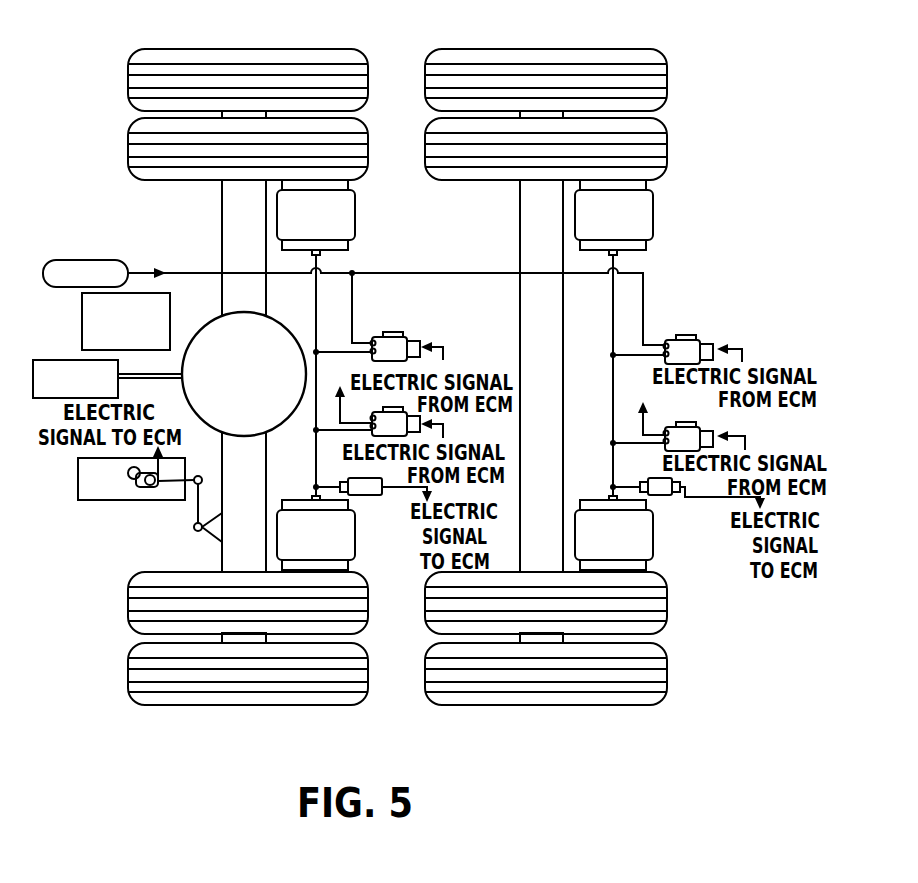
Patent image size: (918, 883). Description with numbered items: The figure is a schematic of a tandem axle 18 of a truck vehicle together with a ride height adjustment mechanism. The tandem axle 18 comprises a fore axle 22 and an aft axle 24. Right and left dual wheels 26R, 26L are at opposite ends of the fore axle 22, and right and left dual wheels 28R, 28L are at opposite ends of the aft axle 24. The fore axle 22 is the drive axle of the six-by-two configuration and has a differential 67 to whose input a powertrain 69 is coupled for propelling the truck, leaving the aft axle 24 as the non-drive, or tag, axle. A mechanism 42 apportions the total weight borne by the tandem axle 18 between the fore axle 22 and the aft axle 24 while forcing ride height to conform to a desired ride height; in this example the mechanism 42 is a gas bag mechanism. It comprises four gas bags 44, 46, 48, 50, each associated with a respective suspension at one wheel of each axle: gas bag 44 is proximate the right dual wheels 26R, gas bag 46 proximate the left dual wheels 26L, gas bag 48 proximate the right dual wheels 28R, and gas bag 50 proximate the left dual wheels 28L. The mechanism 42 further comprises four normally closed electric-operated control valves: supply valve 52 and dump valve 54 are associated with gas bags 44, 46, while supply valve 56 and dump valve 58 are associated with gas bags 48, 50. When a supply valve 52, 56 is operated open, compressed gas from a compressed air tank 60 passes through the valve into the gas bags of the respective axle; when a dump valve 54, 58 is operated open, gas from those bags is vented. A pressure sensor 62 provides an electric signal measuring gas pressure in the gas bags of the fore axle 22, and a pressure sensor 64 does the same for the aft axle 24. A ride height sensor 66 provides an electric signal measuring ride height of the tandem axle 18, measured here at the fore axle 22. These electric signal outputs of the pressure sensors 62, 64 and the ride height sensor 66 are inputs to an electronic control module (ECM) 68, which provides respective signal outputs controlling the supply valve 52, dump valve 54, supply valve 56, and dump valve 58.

The tandem axle 18 is at (194, 191).
The fore axle 22 is at (216, 222).
The aft axle 24 is at (510, 318).
The right dual wheels 26R is at (128, 80).
The left dual wheels 26L is at (128, 605).
The right dual wheels 28R is at (667, 80).
The left dual wheels 28L is at (667, 603).
The mechanism 42 is at (451, 268).
The gas bag 44 is at (357, 217).
The gas bag 46 is at (355, 555).
The gas bag 48 is at (654, 218).
The gas bag 50 is at (653, 555).
The supply valve 52 is at (390, 332).
The dump valve 54 is at (420, 414).
The supply valve 56 is at (690, 336).
The dump valve 58 is at (692, 423).
The compressed air tank 60 is at (97, 260).
The pressure sensor 62 is at (365, 497).
The pressure sensor 64 is at (668, 497).
The ride height sensor 66 is at (133, 483).
The differential 67 is at (244, 374).
The electronic control module (ECM) 68 is at (126, 321).
The powertrain 69 is at (107, 379).